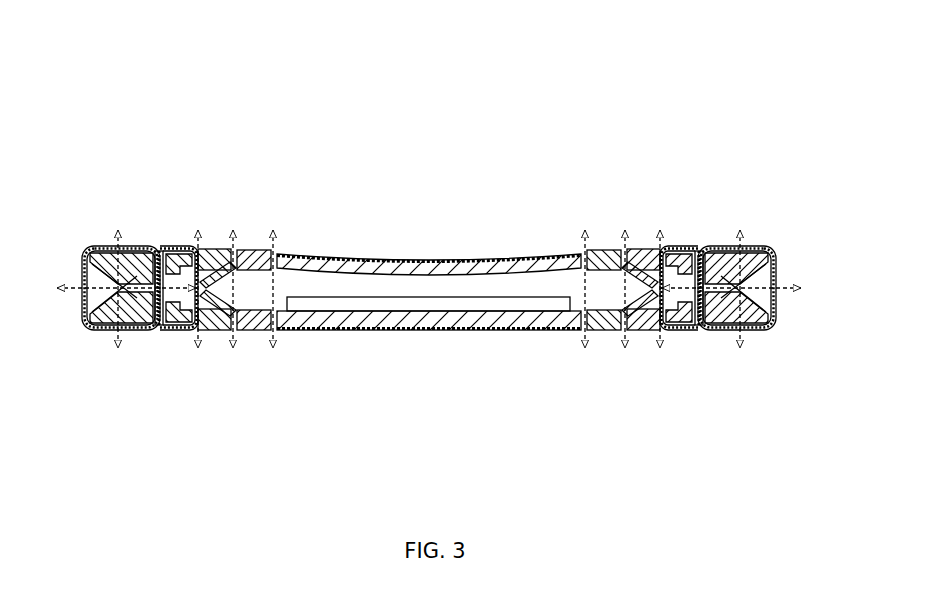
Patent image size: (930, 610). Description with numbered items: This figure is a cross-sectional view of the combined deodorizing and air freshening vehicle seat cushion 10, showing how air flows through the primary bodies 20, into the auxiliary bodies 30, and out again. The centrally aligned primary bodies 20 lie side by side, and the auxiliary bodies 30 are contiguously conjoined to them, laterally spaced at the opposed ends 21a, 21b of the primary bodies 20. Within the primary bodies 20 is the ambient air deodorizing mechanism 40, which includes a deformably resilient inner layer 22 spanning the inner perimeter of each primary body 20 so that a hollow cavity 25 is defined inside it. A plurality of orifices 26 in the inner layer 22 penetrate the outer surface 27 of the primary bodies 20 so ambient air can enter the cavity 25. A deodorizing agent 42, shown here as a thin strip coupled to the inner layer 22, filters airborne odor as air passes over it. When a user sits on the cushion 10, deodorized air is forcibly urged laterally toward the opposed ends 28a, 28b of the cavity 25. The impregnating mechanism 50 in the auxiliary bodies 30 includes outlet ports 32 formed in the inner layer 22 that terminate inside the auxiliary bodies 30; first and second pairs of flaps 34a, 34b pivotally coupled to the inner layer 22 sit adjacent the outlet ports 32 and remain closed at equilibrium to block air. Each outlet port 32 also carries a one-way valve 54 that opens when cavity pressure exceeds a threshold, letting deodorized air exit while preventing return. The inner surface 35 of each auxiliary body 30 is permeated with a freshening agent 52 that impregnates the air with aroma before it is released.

The combined deodorizing and air freshening vehicle seat cushion 10 is at (740, 108).
The primary bodies 20 is at (429, 239).
The opposed end of primary bodies 21a is at (184, 245).
The opposed end of primary bodies 21b is at (690, 246).
The deformably resilient inner layer 22 is at (479, 258).
The hollow cavity 25 is at (259, 331).
The orifices 26 is at (277, 247).
The outer surface of primary bodies 27 is at (525, 331).
The opposed end of cavity 28a is at (256, 246).
The opposed end of cavity 28b is at (596, 246).
The auxiliary bodies 30 is at (92, 244).
The outlet ports 32 is at (160, 331).
The first pair of flaps 34a is at (204, 331).
The second pair of flaps 34b is at (652, 331).
The inner surface of auxiliary bodies 35 is at (777, 246).
The ambient air deodorizing mechanism 40 is at (429, 373).
The deodorizing agent 42 is at (415, 304).
The impregnating mechanism 50 is at (80, 324).
The freshening agent 52 is at (745, 332).
The one-way valve 54 is at (708, 331).